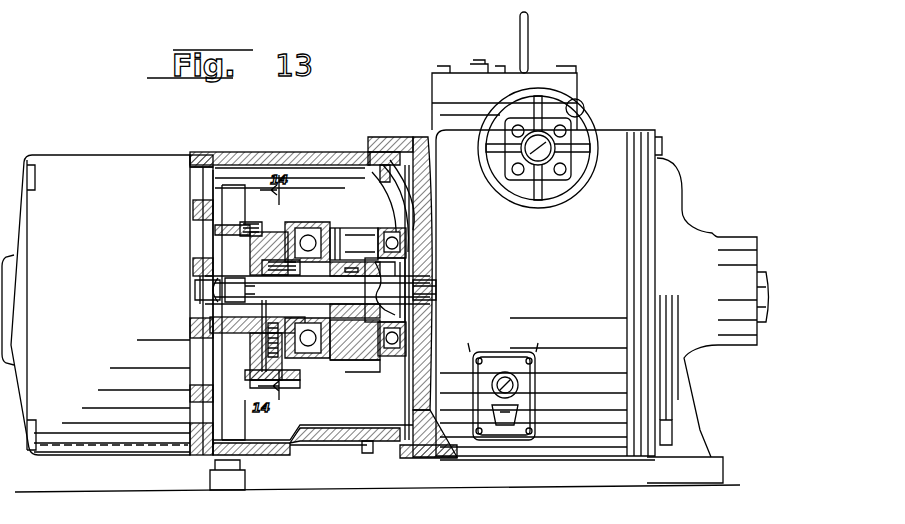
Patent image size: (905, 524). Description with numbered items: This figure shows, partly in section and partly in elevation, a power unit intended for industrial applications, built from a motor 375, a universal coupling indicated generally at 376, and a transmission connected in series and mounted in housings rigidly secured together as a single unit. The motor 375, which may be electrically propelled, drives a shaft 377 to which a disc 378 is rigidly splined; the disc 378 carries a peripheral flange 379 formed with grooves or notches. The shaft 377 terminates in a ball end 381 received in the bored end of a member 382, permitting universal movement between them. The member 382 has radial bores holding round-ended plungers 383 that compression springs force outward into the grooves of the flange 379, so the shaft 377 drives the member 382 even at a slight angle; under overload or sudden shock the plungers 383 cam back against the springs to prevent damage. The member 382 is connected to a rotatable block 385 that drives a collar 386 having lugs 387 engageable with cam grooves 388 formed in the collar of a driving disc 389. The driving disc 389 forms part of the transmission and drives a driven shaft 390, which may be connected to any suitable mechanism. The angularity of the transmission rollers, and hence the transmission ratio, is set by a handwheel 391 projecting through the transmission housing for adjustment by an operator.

The motor 375 is at (67, 186).
The coupling 376 is at (251, 204).
The shaft 377 is at (216, 302).
The disc 378 is at (255, 258).
The peripheral flange 379 is at (277, 225).
The ball end 381 is at (265, 297).
The member 382 is at (292, 222).
The plungers 383 is at (283, 386).
The rotatable block 385 is at (347, 228).
The collar 386 is at (365, 372).
The lugs 387 is at (403, 278).
The cam grooves 388 is at (432, 307).
The driving disc 389 is at (416, 150).
The driven shaft 390 is at (755, 328).
The handwheel 391 is at (586, 124).